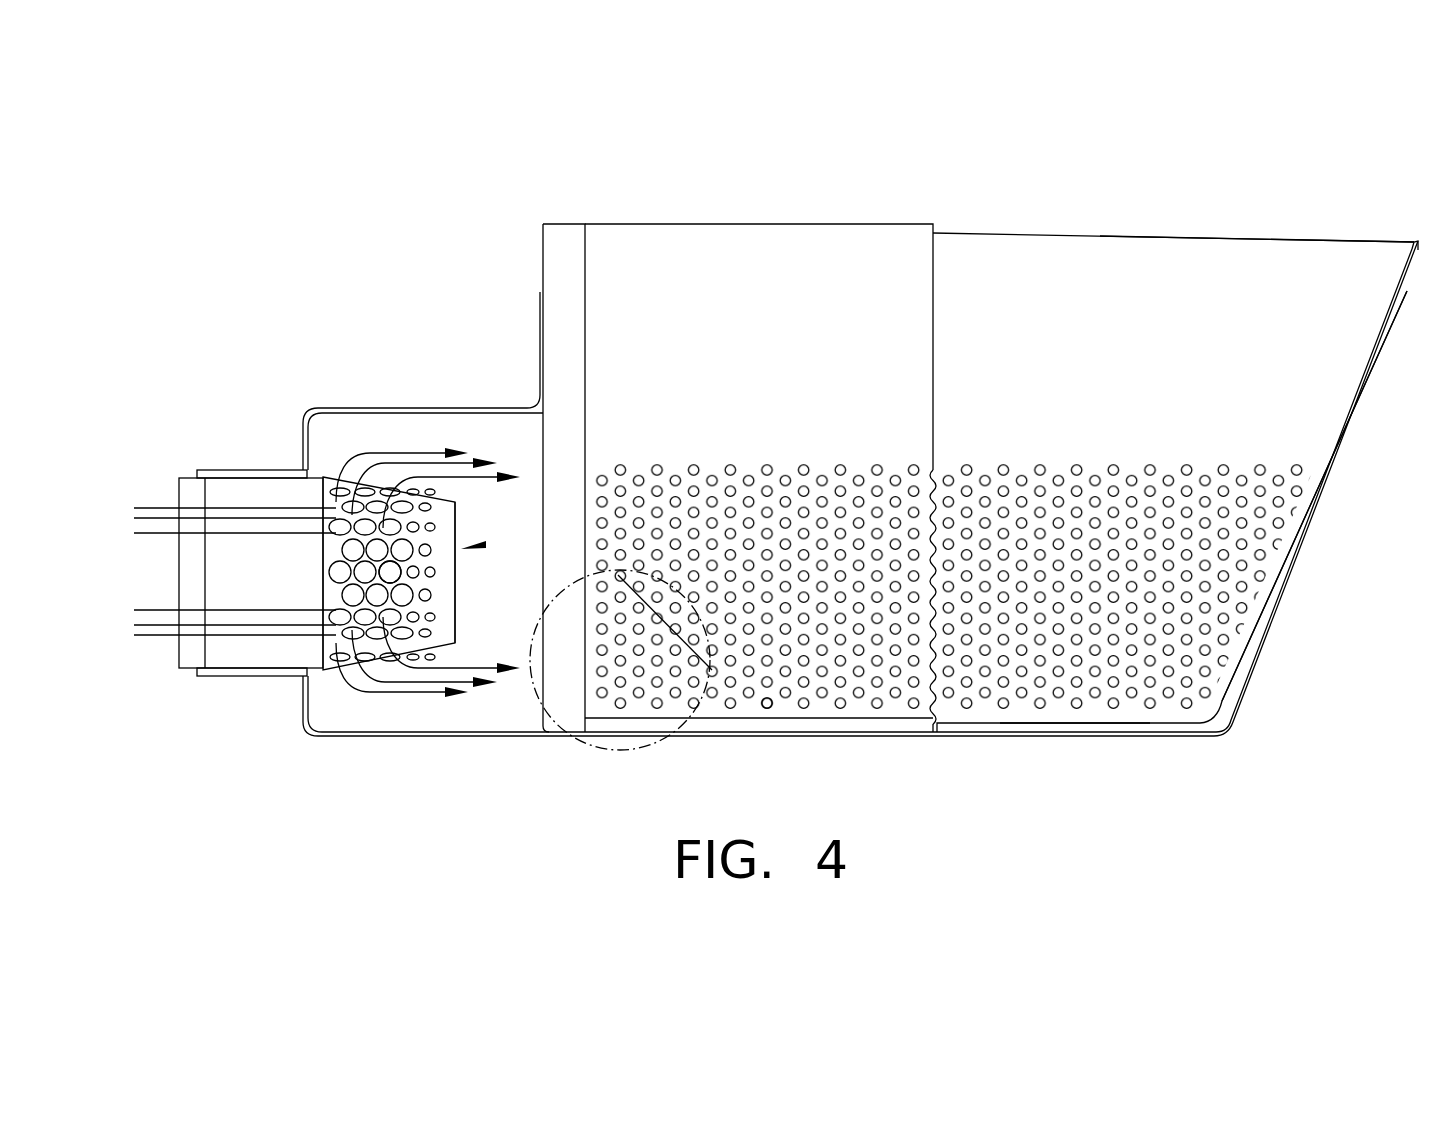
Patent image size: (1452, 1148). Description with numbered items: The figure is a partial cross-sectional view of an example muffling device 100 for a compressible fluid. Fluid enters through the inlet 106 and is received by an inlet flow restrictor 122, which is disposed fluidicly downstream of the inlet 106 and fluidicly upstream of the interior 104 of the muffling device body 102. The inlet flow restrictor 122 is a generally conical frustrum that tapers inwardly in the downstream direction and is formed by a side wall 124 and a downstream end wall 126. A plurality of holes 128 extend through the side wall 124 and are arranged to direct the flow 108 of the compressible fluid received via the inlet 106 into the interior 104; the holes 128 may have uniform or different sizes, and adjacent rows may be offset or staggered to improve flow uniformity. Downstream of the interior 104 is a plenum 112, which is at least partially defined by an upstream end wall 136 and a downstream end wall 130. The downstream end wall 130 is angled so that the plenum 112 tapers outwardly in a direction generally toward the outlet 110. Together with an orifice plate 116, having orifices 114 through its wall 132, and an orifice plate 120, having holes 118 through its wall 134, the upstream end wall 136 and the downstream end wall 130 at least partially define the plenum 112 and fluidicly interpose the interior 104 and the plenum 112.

The muffling device 100 is at (412, 165).
The muffling device body 102 is at (408, 738).
The interior 104 is at (516, 512).
The inlet 106 is at (250, 487).
The flow 108 is at (248, 635).
The outlet 110 is at (1160, 180).
The plenum 112 is at (968, 278).
The orifices 114 is at (1075, 710).
The orifice plate 116 is at (1188, 258).
The holes 118 is at (772, 703).
The orifice plate 120 is at (703, 238).
The inlet flow restrictor 122 is at (486, 545).
The side wall 124 is at (335, 502).
The downstream end wall 126 is at (455, 610).
The holes 128 is at (400, 568).
The downstream end wall 130 is at (1248, 637).
The wall 132 is at (1037, 672).
The wall 134 is at (745, 708).
The upstream end wall 136 is at (558, 243).